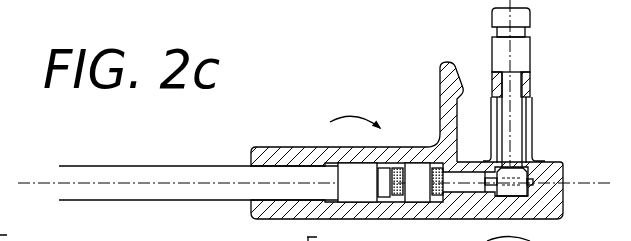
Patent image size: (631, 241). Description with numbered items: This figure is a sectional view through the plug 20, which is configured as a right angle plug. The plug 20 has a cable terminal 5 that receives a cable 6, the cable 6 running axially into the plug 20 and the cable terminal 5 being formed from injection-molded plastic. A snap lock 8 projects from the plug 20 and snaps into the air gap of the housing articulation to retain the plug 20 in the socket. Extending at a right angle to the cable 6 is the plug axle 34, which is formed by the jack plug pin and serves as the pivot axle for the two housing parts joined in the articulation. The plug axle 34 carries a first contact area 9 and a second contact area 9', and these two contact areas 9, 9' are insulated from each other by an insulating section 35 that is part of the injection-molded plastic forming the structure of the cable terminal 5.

The cable terminal 5 is at (263, 155).
The cable 6 is at (183, 177).
The snap lock 8 is at (445, 80).
The first contact area 9 is at (539, 102).
The second contact area 9' is at (537, 125).
The plug 20 is at (338, 125).
The plug axle 34 is at (532, 80).
The insulating section 35 is at (497, 90).